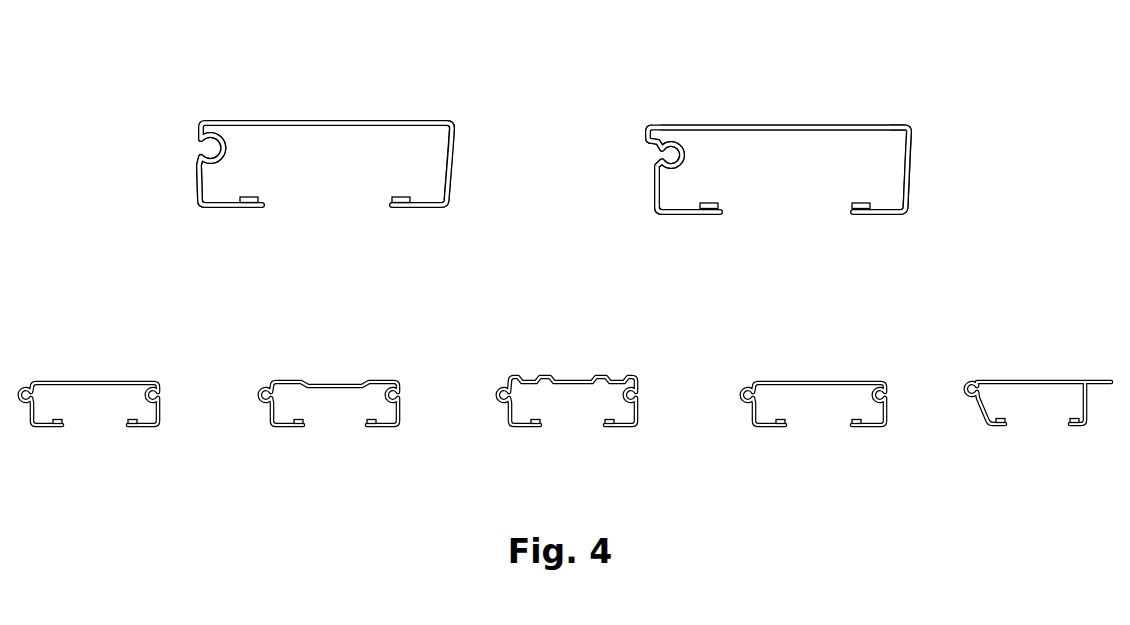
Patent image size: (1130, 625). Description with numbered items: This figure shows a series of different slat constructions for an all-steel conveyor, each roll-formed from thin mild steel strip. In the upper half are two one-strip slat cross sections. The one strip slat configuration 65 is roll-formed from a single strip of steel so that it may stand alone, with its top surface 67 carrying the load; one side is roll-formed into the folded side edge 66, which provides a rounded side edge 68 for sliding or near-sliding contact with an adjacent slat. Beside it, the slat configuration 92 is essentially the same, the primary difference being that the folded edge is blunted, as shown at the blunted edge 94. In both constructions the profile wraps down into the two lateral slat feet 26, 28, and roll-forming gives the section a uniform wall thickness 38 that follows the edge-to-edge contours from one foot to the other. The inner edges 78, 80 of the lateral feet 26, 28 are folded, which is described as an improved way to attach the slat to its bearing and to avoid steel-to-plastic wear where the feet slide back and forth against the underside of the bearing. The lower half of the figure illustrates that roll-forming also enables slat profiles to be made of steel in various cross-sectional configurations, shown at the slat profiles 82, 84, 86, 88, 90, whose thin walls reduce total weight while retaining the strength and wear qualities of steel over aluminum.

The slat foot 26 is at (240, 210).
The slat foot 28 is at (443, 210).
The uniform wall thickness 38 is at (458, 114).
The one strip slat configuration 65 is at (798, 110).
The folded side edge 66 is at (674, 128).
The top surface 67 is at (846, 123).
The rounded side edge 68 is at (648, 126).
The inner edge of lateral foot 78 is at (258, 199).
The inner edge of lateral foot 80 is at (398, 200).
The slat profile 82 is at (97, 364).
The slat profile 84 is at (334, 364).
The slat profile 86 is at (580, 364).
The slat profile 88 is at (811, 364).
The slat profile 90 is at (1034, 364).
The slat configuration 92 is at (348, 106).
The blunted edge 94 is at (199, 124).